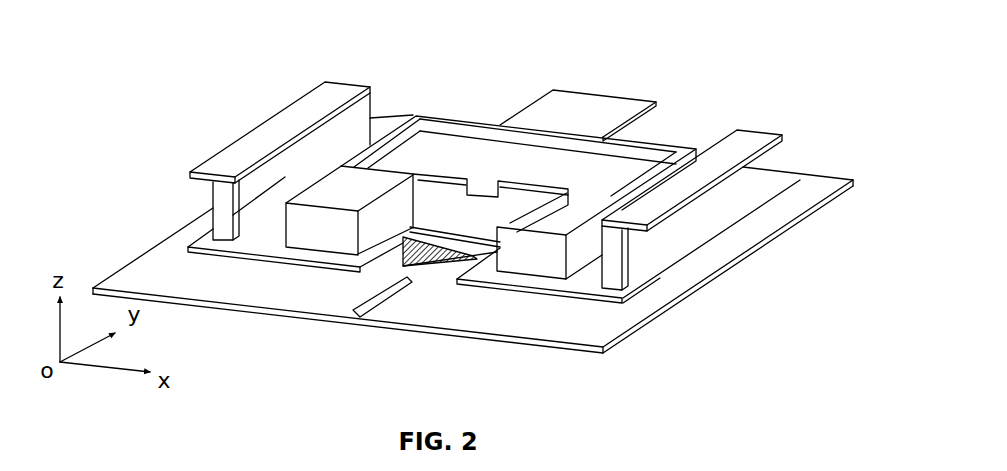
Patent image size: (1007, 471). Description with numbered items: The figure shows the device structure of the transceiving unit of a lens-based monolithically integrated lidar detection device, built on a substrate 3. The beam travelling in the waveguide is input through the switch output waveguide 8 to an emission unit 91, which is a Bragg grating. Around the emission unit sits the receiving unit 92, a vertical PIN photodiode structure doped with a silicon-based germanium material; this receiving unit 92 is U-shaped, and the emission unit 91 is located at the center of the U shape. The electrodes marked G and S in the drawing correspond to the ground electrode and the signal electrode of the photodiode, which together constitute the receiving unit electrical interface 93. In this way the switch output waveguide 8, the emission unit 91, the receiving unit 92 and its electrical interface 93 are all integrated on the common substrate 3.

The substrate 3 is at (340, 297).
The switch output waveguide 8 is at (387, 296).
The emission unit 91 is at (440, 267).
The receiving unit 92 is at (491, 168).
The receiving unit electrical interface 93 is at (277, 123).